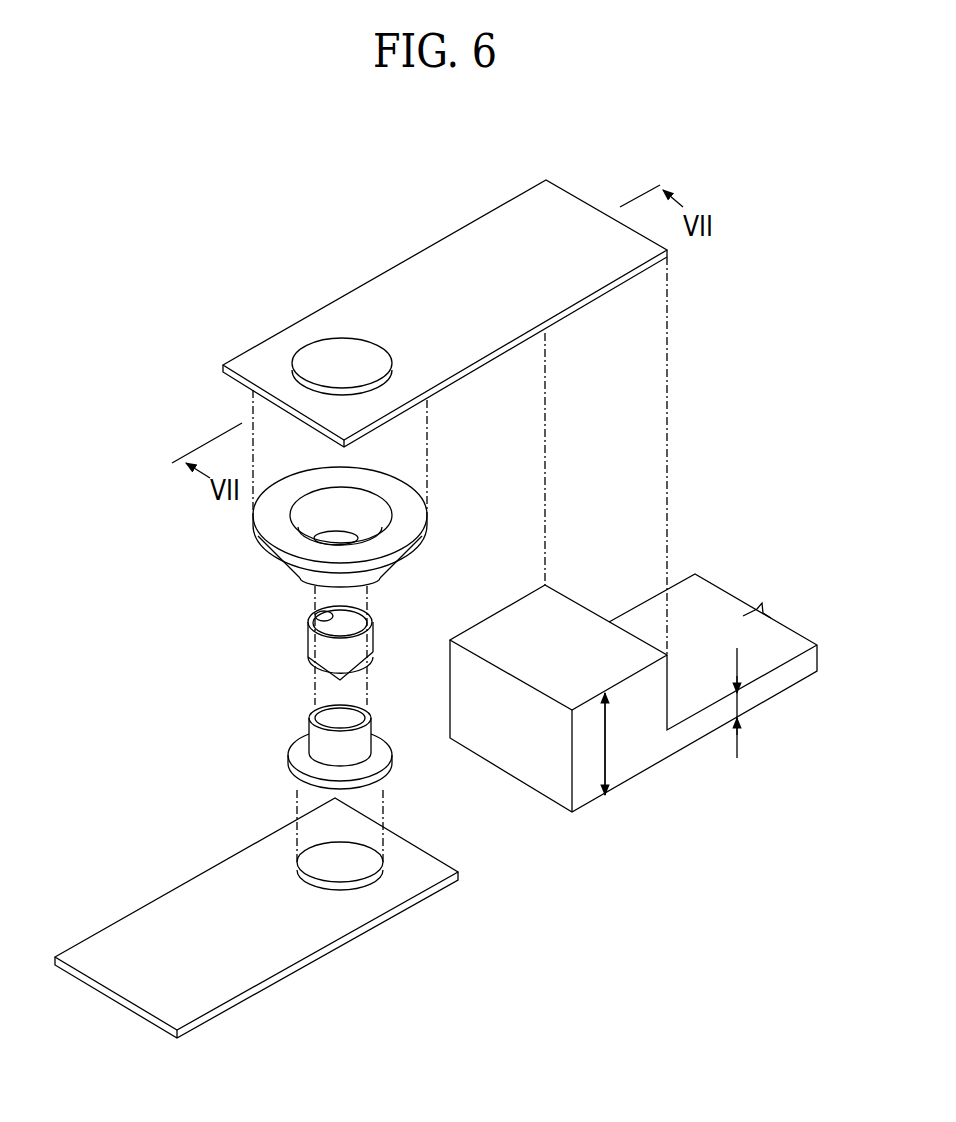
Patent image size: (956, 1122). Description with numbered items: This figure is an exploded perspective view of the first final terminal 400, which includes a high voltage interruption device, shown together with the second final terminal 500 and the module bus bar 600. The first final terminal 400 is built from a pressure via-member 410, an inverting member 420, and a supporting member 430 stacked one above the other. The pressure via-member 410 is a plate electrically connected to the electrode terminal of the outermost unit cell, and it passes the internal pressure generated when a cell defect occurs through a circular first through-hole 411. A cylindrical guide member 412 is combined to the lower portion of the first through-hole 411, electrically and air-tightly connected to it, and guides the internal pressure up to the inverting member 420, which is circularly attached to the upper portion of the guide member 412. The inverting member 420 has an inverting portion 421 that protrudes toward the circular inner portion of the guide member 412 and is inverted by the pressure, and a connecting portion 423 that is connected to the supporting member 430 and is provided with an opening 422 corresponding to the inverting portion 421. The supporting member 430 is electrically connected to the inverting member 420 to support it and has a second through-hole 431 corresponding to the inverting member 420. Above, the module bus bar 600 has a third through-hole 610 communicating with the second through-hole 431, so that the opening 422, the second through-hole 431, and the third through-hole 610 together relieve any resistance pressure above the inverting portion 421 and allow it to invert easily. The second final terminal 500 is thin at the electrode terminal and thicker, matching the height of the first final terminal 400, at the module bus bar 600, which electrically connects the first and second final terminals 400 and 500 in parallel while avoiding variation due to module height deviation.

The first final terminal 400 is at (463, 536).
The pressure via-member 410 is at (190, 912).
The first through-hole 411 is at (363, 853).
The guide member 412 is at (315, 742).
The inverting member 420 is at (347, 645).
The inverting portion 421 is at (330, 676).
The opening 422 is at (318, 620).
The connecting portion 423 is at (318, 648).
The supporting member 430 is at (406, 480).
The second through-hole 431 is at (300, 532).
The second final terminal 500 is at (589, 594).
The module bus bar 600 is at (437, 270).
The third through-hole 610 is at (343, 342).